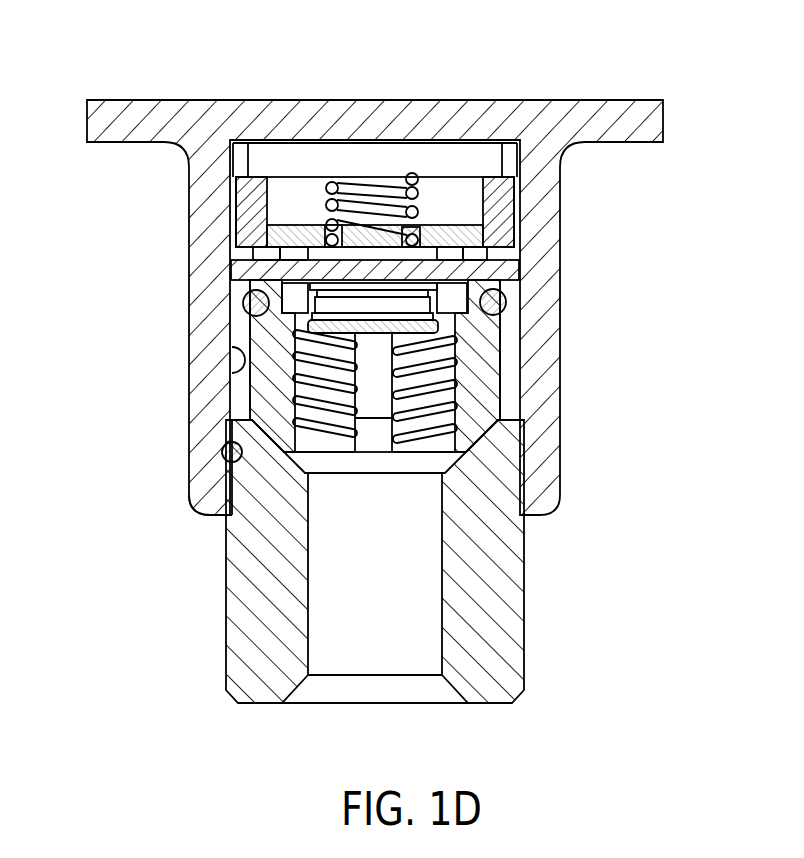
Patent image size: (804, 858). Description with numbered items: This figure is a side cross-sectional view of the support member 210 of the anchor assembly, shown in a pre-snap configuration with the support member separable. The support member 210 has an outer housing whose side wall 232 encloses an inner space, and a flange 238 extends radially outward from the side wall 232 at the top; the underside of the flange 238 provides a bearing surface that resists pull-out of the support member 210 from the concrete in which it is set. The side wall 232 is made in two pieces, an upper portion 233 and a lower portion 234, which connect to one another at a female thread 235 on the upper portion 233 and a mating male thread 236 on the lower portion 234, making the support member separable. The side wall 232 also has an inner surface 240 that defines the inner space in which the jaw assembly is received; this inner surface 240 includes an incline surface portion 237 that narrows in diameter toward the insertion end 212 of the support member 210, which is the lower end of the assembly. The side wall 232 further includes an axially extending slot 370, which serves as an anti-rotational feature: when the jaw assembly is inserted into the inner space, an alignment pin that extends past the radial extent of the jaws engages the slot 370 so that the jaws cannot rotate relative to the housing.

The support member 210 is at (598, 100).
The flange 238 is at (663, 120).
The side wall 232 is at (553, 322).
The lower portion 234 is at (226, 605).
The insertion end 212 is at (257, 703).
The upper portion 233 is at (228, 462).
The female thread 235 is at (228, 437).
The male thread 236 is at (228, 495).
The incline surface portion 237 is at (427, 458).
The inner surface 240 is at (230, 372).
The axially extending slot 370 is at (243, 323).